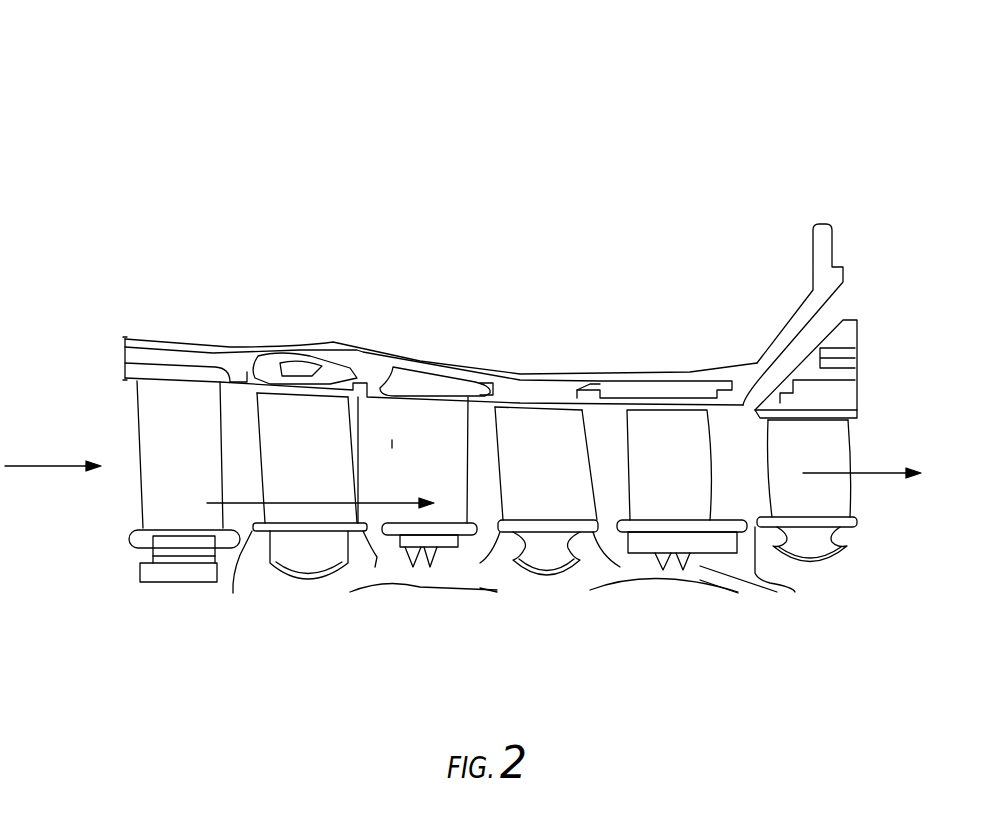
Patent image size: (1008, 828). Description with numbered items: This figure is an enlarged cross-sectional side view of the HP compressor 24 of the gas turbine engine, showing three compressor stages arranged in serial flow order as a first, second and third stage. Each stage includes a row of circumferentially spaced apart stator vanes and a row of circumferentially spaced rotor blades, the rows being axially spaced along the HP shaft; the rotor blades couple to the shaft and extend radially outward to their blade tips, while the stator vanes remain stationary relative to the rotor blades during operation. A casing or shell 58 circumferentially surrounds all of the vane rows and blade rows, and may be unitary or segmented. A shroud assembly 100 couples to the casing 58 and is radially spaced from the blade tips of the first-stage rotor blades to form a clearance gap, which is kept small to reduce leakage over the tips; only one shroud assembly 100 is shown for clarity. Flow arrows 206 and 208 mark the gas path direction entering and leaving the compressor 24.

The HP compressor 24 is at (96, 60).
The casing 58 is at (245, 350).
The shroud assembly 100 is at (364, 351).
The hot gas flow direction 206 is at (58, 465).
The exhaust flow direction 208 is at (873, 477).